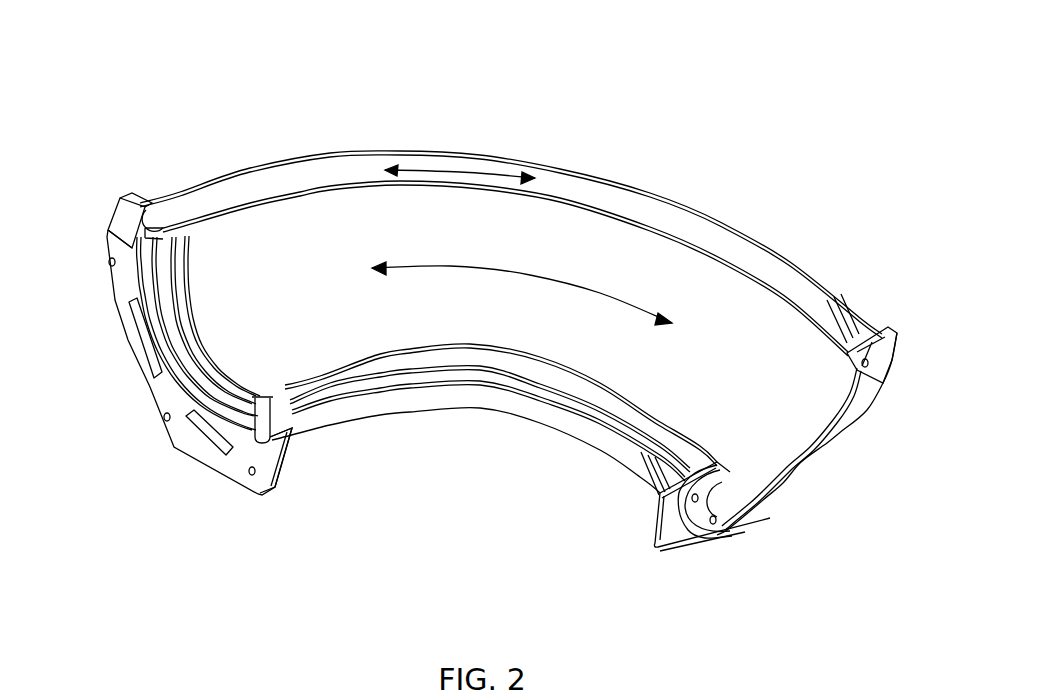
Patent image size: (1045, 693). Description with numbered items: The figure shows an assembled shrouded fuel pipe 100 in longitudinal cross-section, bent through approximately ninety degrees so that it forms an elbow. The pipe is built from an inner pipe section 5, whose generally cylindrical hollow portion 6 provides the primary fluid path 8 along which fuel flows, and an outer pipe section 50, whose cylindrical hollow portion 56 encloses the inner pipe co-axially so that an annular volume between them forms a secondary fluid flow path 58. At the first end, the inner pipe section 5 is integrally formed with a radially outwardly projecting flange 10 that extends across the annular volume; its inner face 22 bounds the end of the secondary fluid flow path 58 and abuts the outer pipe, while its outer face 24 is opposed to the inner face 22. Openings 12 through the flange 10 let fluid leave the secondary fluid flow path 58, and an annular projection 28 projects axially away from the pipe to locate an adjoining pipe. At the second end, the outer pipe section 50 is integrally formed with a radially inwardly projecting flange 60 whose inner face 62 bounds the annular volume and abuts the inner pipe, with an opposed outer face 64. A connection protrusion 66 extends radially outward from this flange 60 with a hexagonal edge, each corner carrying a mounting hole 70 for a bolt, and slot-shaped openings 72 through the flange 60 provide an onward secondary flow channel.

The shrouded fuel pipe 100 is at (205, 74).
The inner pipe section 5 is at (727, 260).
The cylindrical hollow portion 6 is at (740, 333).
The primary fluid path 8 is at (590, 305).
The outwardly projecting flange 10 is at (697, 520).
The openings 12 is at (727, 537).
The inner face 22 is at (870, 328).
The outer face 24 is at (880, 365).
The annular projection 28 is at (732, 478).
The outer pipe section 50 is at (683, 208).
The cylindrical hollow portion 56 is at (583, 193).
The secondary fluid flow path 58 is at (463, 173).
The inwardly projecting flange 60 is at (113, 277).
The inner face 62 is at (158, 212).
The outer face 64 is at (128, 243).
The connection protrusion 66 is at (213, 470).
The mounting hole 70 is at (253, 478).
The openings 72 is at (130, 330).